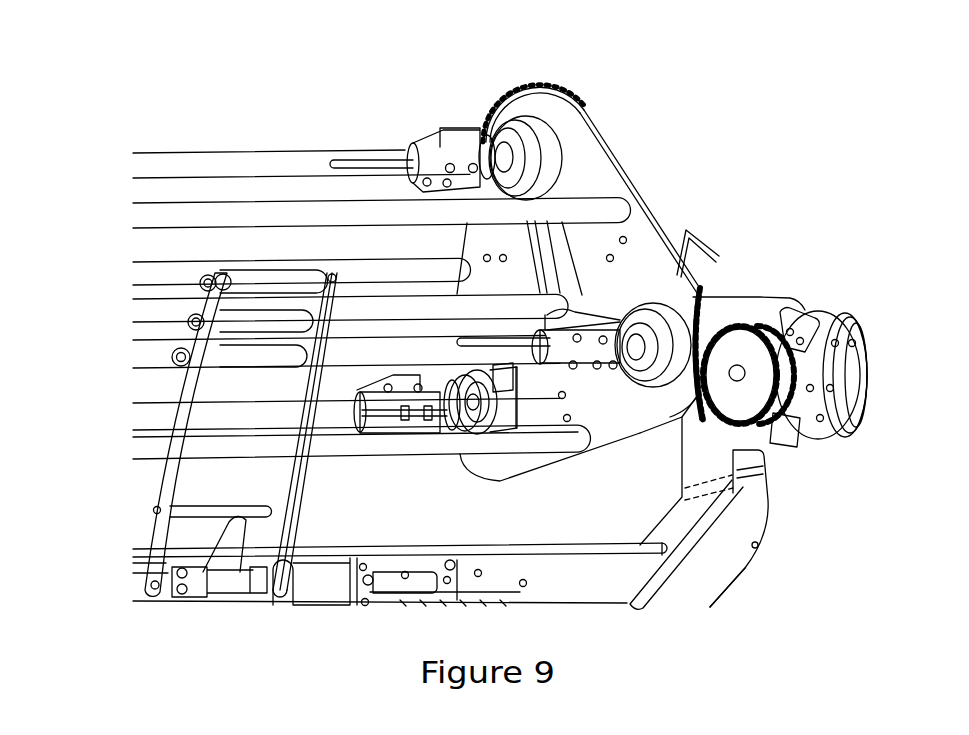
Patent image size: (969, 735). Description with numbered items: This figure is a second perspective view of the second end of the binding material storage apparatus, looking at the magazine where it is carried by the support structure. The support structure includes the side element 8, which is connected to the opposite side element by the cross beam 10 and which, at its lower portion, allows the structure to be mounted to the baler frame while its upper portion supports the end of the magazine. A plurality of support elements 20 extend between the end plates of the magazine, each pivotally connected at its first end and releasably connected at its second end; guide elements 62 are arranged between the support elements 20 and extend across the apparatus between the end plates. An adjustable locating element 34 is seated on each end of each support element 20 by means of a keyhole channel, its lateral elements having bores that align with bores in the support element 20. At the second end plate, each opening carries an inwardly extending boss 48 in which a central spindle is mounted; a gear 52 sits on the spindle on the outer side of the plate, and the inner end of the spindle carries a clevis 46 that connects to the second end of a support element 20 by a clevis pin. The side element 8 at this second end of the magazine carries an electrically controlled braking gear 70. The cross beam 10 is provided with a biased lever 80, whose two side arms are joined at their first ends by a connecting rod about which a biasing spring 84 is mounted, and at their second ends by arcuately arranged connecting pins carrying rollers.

The side element 8 is at (727, 553).
The cross beam 10 is at (512, 568).
The support element 20 is at (187, 163).
The adjustable locating element 34 is at (430, 118).
The clevis 46 is at (645, 400).
The boss 48 is at (558, 150).
The gear 52 is at (582, 97).
The guide element 62 is at (292, 218).
The electrically controlled braking gear 70 is at (742, 354).
The biased lever 80 is at (137, 545).
The biasing spring 84 is at (202, 597).